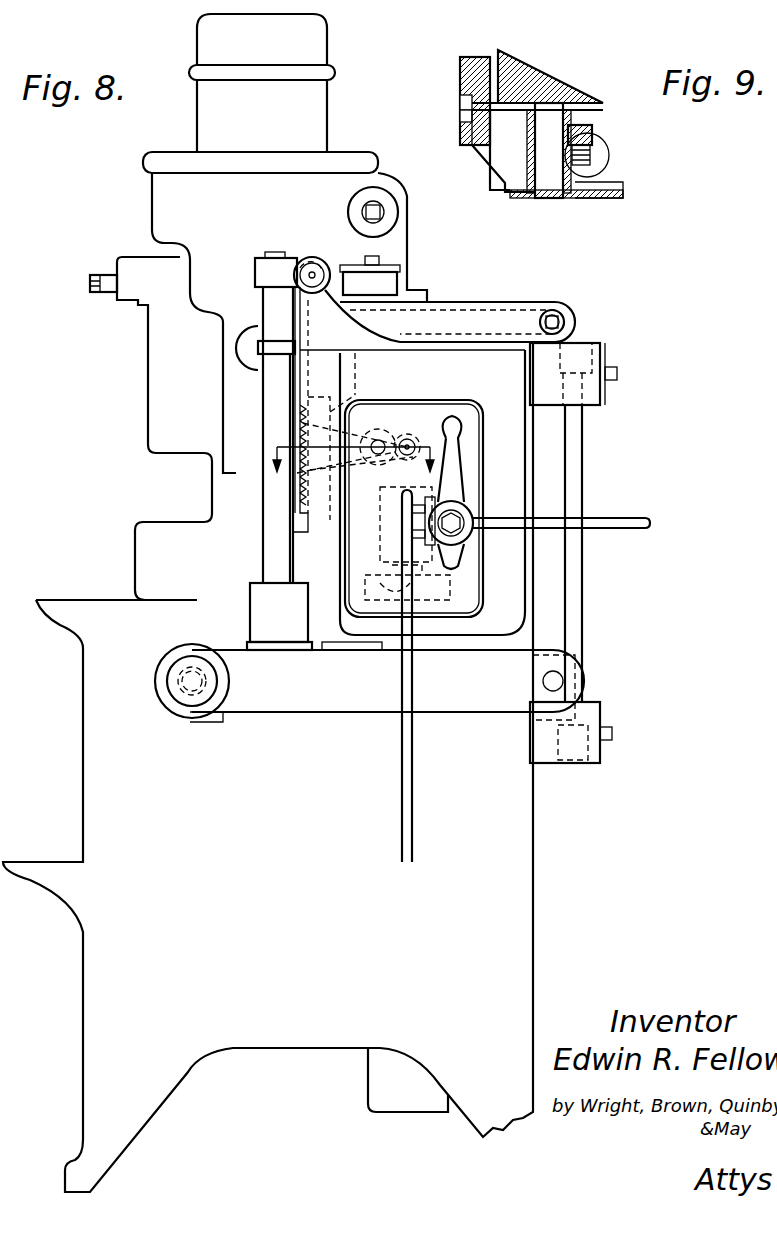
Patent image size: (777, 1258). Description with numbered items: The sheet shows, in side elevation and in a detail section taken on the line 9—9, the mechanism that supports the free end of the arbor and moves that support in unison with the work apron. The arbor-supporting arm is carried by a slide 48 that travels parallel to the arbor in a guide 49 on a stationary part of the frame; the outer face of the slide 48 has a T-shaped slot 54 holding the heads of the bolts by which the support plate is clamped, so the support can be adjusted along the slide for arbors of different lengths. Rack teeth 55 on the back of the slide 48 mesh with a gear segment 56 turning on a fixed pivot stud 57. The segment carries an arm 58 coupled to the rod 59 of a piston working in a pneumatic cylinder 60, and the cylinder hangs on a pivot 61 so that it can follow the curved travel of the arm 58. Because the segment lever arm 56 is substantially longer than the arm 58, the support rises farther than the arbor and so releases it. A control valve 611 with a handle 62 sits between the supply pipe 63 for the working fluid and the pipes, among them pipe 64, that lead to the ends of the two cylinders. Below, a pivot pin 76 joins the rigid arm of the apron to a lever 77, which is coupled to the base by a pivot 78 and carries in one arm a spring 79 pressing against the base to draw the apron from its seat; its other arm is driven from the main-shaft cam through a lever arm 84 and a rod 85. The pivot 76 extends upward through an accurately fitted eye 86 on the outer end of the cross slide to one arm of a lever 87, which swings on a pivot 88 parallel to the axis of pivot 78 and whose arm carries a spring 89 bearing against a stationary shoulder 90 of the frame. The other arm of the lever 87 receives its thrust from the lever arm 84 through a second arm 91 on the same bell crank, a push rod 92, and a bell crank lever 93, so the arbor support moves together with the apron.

In FIG. 8, the section line 9 is at (348, 463).
In FIG. 8, the slide 48 is at (298, 490).
In FIG. 9, the slide 48 is at (465, 112).
In FIG. 8, the guide 49 is at (300, 385).
In FIG. 9, the guide 49 is at (470, 130).
In FIG. 9, the T-shaped slot 54 is at (465, 103).
In FIG. 8, the rack teeth 55 is at (302, 488).
In FIG. 8, the gear segment 56 is at (322, 405).
In FIG. 9, the gear segment 56 is at (500, 125).
In FIG. 8, the fixed pivot stud 57 is at (378, 444).
In FIG. 9, the fixed pivot stud 57 is at (548, 122).
In FIG. 8, the arm 58 is at (408, 438).
In FIG. 9, the arm 58 is at (592, 133).
In FIG. 8, the piston rod 59 is at (380, 480).
In FIG. 8, the pneumatic cylinder 60 is at (392, 545).
In FIG. 9, the pneumatic cylinder 60 is at (609, 155).
In FIG. 8, the pivot 61 is at (385, 570).
In FIG. 8, the handle 62 is at (455, 430).
In FIG. 8, the supply pipe 63 is at (605, 520).
In FIG. 8, the pipe 64 is at (402, 780).
In FIG. 8, the pivot pin 76 is at (270, 405).
In FIG. 8, the lever 77 is at (387, 686).
In FIG. 8, the pivot 78 is at (330, 640).
In FIG. 8, the spring 79 is at (178, 690).
In FIG. 8, the lever arm 84 is at (551, 665).
In FIG. 8, the rod 85 is at (565, 680).
In FIG. 8, the eye 86 is at (270, 338).
In FIG. 8, the lever 87 is at (435, 318).
In FIG. 8, the pivot 88 is at (380, 268).
In FIG. 8, the spring 89 is at (303, 260).
In FIG. 8, the stationary shoulder 90 is at (332, 262).
In FIG. 8, the second arm 91 is at (575, 768).
In FIG. 8, the push rod 92 is at (585, 585).
In FIG. 8, the bell crank lever 93 is at (578, 352).
In FIG. 8, the control valve 611 is at (462, 510).